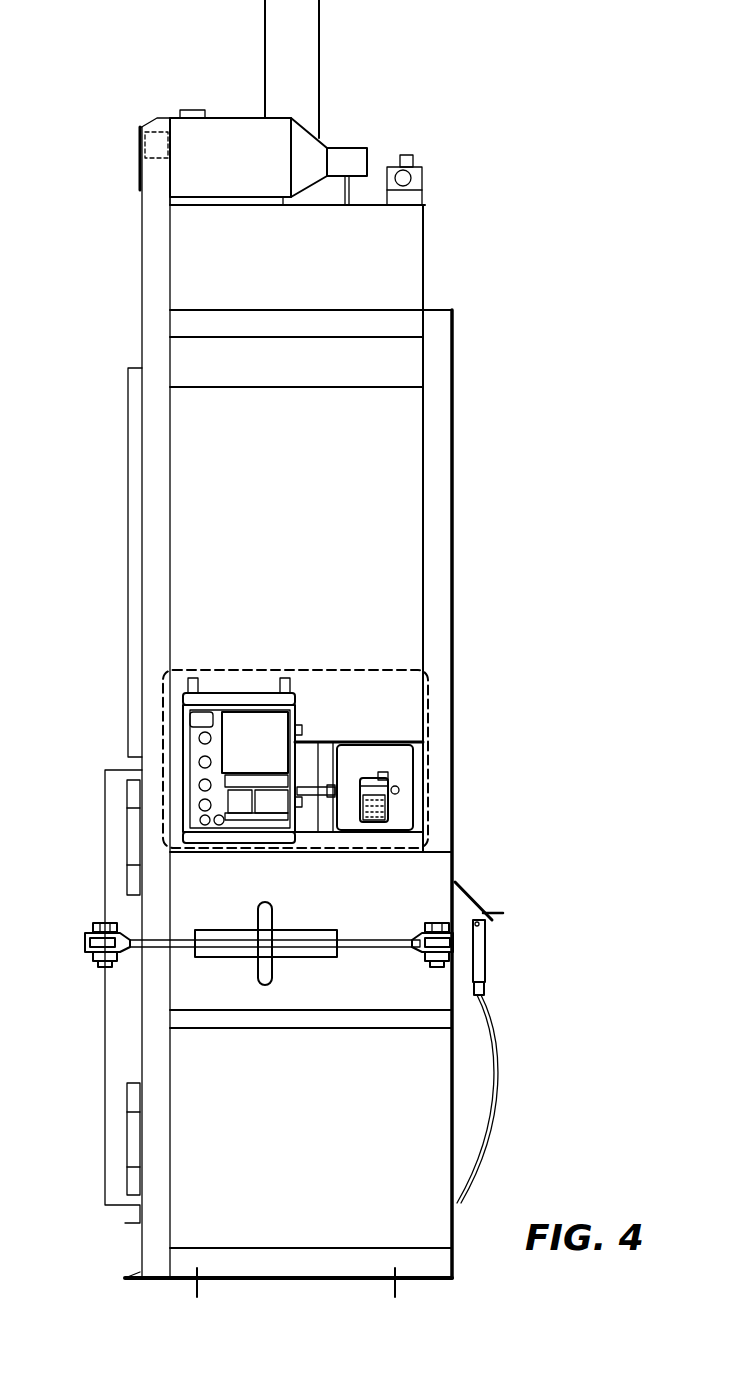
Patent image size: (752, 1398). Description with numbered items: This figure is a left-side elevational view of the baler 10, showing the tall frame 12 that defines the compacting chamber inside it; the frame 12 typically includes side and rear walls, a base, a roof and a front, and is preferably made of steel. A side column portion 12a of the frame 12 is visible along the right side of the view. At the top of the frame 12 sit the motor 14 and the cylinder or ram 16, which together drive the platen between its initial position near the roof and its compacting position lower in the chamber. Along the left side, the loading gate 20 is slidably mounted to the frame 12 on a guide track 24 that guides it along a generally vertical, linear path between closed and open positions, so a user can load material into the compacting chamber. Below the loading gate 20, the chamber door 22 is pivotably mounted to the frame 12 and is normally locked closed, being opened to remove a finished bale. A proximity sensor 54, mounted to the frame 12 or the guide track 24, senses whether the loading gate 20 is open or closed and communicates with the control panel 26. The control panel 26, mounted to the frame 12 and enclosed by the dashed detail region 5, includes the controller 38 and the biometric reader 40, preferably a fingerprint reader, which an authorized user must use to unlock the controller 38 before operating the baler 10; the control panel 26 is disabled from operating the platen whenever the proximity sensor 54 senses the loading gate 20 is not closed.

The baler 10 is at (472, 118).
The frame 12 is at (390, 447).
The housing side column 12a is at (428, 307).
The motor 14 is at (237, 117).
The cylinder or ram 16 is at (310, 33).
The loading gate 20 is at (128, 428).
The chamber door 22 is at (117, 1022).
The guide track 24 is at (157, 472).
The control panel 26 is at (382, 724).
The controller 38 is at (192, 732).
The biometric reader 40 is at (399, 790).
The proximity sensor 54 is at (140, 142).
The detail region of FIG. 5 is at (332, 660).